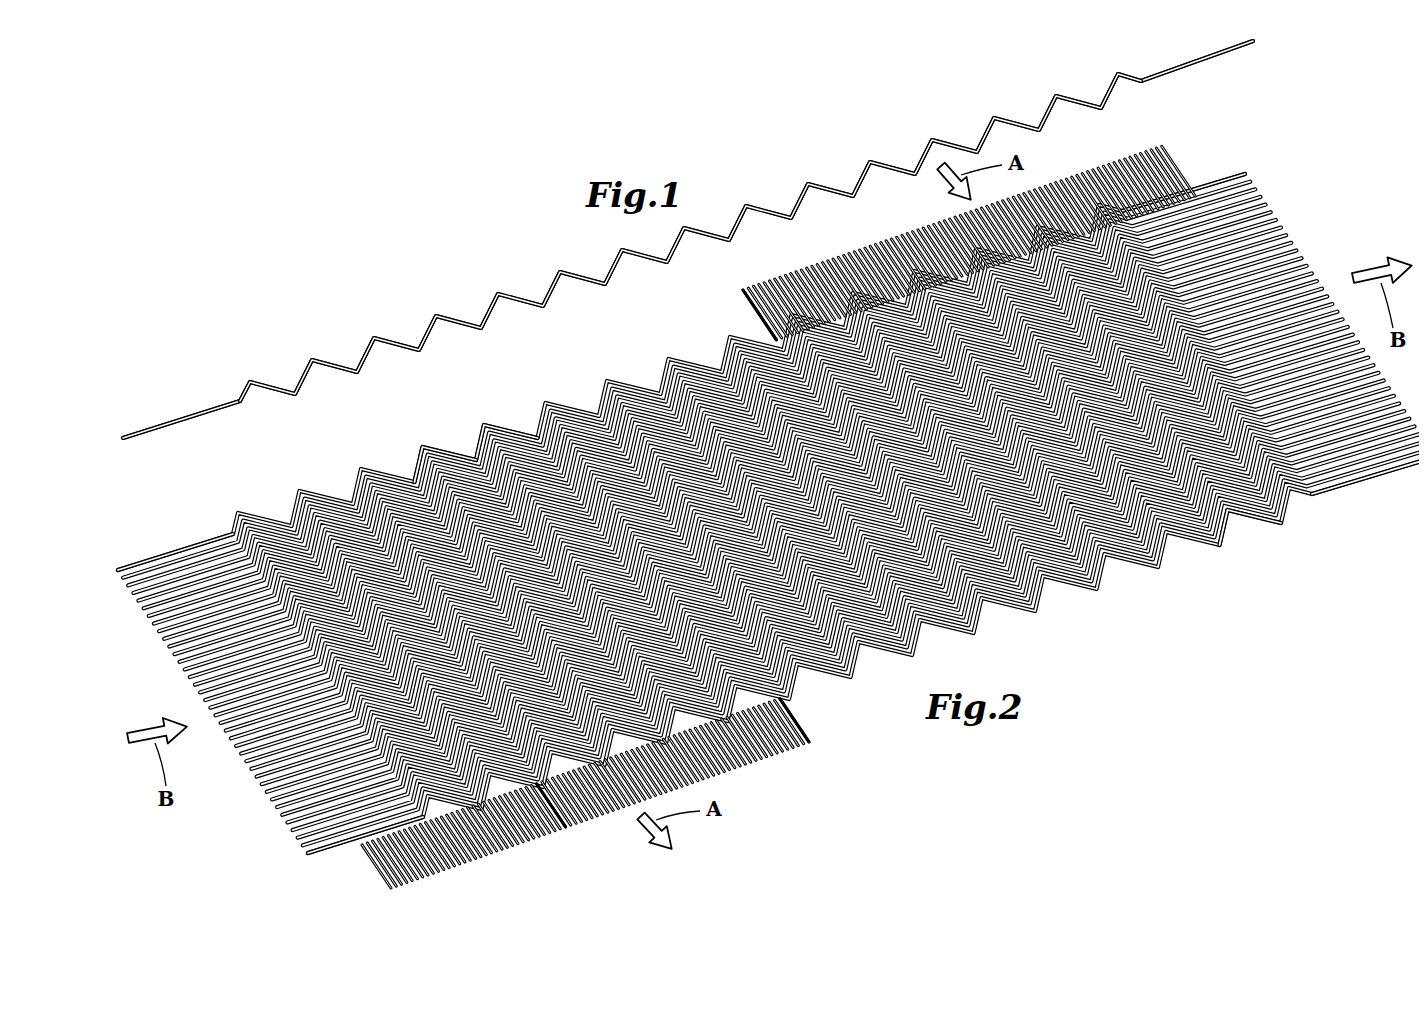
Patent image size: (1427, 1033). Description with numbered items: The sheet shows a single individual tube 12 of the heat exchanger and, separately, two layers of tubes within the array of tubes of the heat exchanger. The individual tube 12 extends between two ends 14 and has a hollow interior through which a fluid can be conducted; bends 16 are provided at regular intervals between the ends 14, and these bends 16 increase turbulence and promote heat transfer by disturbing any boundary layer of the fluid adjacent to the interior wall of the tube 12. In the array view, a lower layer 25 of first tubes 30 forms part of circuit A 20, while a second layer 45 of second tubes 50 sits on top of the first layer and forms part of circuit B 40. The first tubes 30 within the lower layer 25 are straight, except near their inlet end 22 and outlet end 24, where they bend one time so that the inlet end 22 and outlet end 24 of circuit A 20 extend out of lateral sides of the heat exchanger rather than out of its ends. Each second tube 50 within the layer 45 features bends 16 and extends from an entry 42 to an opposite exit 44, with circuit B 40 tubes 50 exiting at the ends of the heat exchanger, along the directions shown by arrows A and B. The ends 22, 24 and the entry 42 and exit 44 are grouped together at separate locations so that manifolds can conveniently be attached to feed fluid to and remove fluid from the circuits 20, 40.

In FIG. 1, the individual tube 12 is at (455, 263).
In FIG. 1, the end 14 is at (1228, 50).
In FIG. 1, the bend 16 is at (1012, 103).
In FIG. 2, the circuit A 20 is at (768, 523).
In FIG. 2, the inlet end 22 is at (738, 284).
In FIG. 2, the outlet end 24 is at (560, 828).
In FIG. 2, the lower layer 25 is at (808, 752).
In FIG. 2, the first tube 30 is at (794, 518).
In FIG. 2, the circuit B 40 is at (768, 540).
In FIG. 2, the entry 42 is at (325, 838).
In FIG. 2, the exit 44 is at (1353, 478).
In FIG. 2, the layer 45 is at (465, 420).
In FIG. 2, the second tube 50 is at (412, 460).